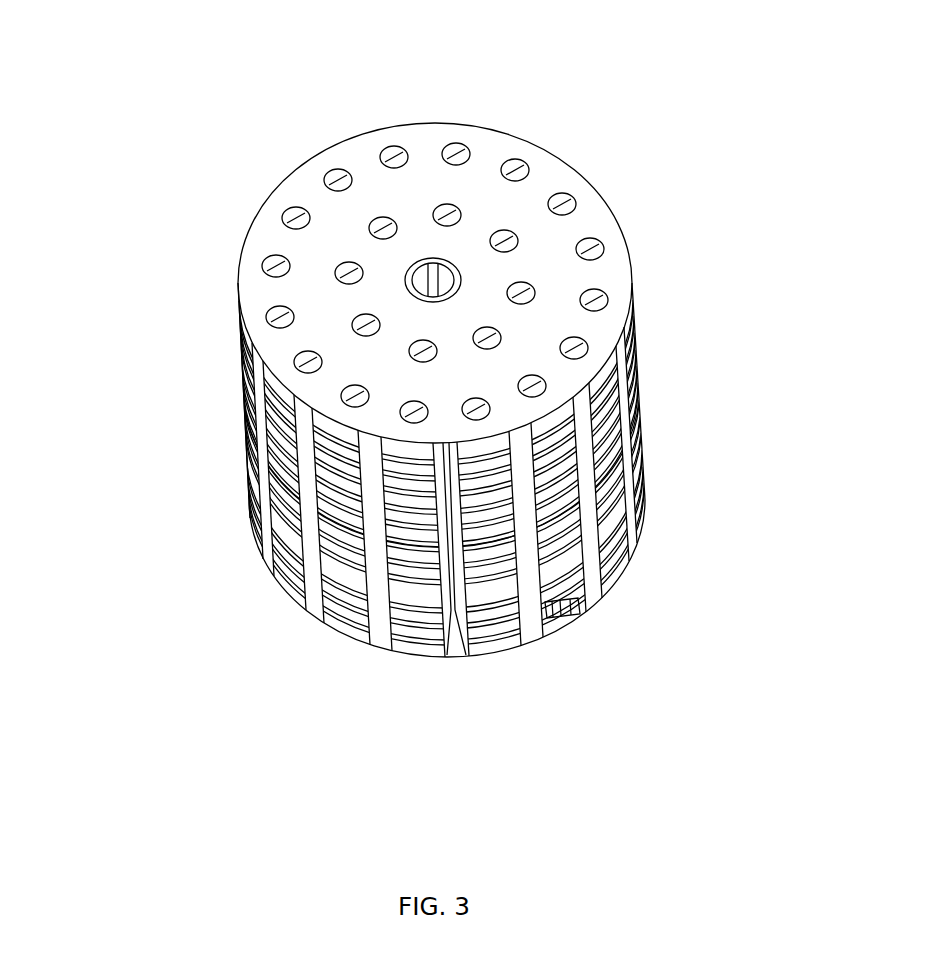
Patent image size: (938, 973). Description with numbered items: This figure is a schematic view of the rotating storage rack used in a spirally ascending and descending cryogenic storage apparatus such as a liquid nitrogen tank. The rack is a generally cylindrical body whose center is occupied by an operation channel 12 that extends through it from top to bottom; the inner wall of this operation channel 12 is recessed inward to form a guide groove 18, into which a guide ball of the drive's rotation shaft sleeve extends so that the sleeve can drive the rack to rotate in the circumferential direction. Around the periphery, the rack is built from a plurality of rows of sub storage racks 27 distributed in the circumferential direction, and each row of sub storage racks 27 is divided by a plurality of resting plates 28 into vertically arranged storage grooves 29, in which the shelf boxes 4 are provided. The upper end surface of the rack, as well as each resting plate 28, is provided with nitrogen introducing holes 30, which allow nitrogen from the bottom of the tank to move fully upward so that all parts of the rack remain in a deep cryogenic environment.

The shelf box 4 is at (567, 613).
The operation channel 12 is at (450, 268).
The guide groove 18 is at (440, 270).
The sub storage rack 27 is at (635, 353).
The resting plate 28 is at (410, 603).
The storage groove 29 is at (333, 510).
The nitrogen introducing hole 30 is at (262, 270).